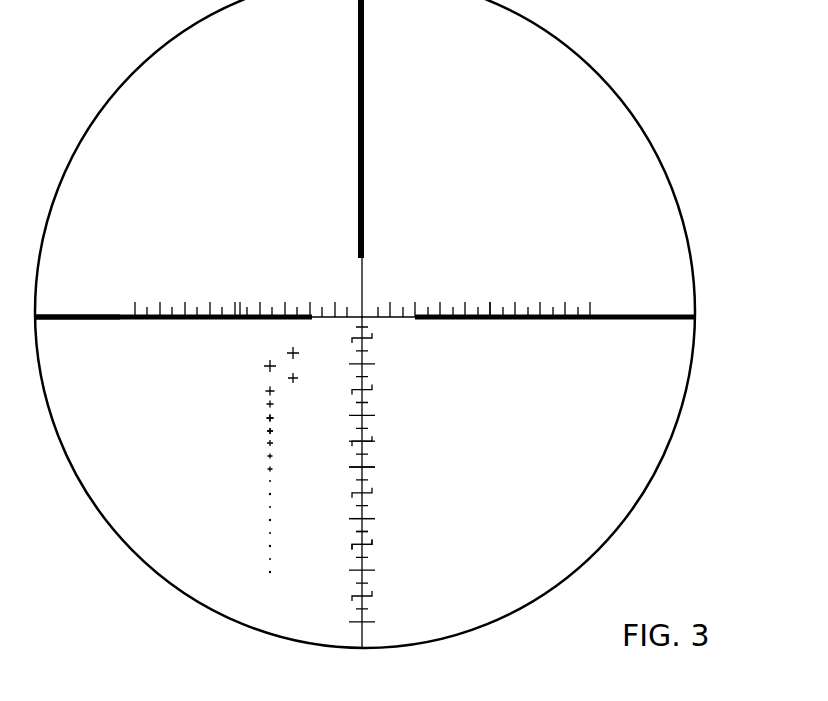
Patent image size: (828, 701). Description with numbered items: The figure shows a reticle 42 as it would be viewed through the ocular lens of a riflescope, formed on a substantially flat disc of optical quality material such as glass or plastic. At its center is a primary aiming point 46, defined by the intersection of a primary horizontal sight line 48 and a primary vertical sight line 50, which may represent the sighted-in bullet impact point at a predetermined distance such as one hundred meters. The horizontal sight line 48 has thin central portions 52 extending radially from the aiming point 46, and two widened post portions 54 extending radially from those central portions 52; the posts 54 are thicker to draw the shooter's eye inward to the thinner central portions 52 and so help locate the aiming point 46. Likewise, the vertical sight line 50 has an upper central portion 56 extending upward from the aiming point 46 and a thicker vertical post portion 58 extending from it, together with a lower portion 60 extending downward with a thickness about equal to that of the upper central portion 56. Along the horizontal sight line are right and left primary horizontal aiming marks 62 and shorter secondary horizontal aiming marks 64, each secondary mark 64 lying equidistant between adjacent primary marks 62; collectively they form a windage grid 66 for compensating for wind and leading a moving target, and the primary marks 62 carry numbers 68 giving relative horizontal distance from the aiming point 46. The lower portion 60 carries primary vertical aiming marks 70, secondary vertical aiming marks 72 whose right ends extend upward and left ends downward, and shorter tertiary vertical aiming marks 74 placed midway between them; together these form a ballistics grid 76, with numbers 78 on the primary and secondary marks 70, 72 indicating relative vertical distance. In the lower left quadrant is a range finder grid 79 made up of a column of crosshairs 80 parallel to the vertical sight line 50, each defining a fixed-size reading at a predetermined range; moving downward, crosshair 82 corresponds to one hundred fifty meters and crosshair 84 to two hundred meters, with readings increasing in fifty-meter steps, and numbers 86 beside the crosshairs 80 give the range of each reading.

The reticle 42 is at (85, 112).
The primary aiming point 46 is at (362, 319).
The primary horizontal sight line 48 is at (113, 305).
The primary vertical sight line 50 is at (357, 150).
The central portions 52 is at (332, 319).
The widened post portions 54 is at (78, 321).
The upper central portion 56 is at (386, 287).
The vertical post portion 58 is at (364, 115).
The lower portion 60 is at (355, 410).
The primary horizontal aiming marks 62 is at (182, 301).
The secondary horizontal aiming marks 64 is at (197, 305).
The windage grid 66 is at (291, 282).
The numbers 68 is at (240, 301).
The primary vertical aiming marks 70 is at (394, 513).
The secondary vertical aiming marks 72 is at (394, 547).
The tertiary vertical aiming marks 74 is at (370, 532).
The ballistics grid 76 is at (400, 460).
The numbers 78 is at (388, 434).
The range finder grid 79 is at (233, 410).
The crosshairs 80 is at (262, 428).
The crosshair 82 is at (300, 350).
The crosshair 84 is at (296, 359).
The numbers 86 is at (267, 548).